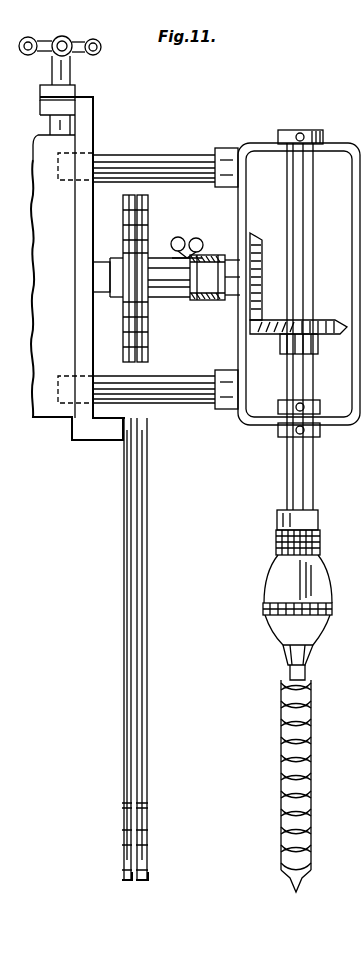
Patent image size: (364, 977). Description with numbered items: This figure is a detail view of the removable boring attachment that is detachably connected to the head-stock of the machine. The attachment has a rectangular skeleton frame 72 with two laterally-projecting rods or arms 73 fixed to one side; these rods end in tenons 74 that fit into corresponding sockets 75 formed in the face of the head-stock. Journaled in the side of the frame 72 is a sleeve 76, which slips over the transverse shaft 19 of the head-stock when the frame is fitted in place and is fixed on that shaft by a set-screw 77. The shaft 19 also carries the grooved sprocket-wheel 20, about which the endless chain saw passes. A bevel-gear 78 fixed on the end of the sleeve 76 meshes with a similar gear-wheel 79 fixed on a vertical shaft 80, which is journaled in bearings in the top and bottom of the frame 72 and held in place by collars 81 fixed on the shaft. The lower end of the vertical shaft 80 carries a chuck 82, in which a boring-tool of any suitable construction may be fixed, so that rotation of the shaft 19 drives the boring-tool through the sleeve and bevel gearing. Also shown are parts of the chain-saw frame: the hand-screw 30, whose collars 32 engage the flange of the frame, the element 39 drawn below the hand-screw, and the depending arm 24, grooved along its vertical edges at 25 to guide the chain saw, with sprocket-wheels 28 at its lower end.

The hand-screw 30 is at (60, 49).
The collars 32 is at (75, 90).
The clamp jaw 39 is at (45, 133).
The tenons 74 is at (72, 176).
The sockets 75 is at (68, 155).
The laterally-projecting rods or arms 73 is at (165, 285).
The shaft 19 is at (98, 262).
The grooved sprocket-wheel 20 is at (152, 328).
The sleeve 76 is at (210, 255).
The set-screw 77 is at (186, 240).
The rectangular skeleton frame 72 is at (247, 178).
The bevel-gear 78 is at (256, 242).
The gear-wheel 79 is at (318, 320).
The vertical shaft 80 is at (287, 387).
The collars 81 is at (318, 134).
The chuck 82 is at (267, 585).
The depending arm 24 is at (123, 601).
The grooves 25 is at (141, 728).
The sprocket-wheels 28 is at (148, 862).